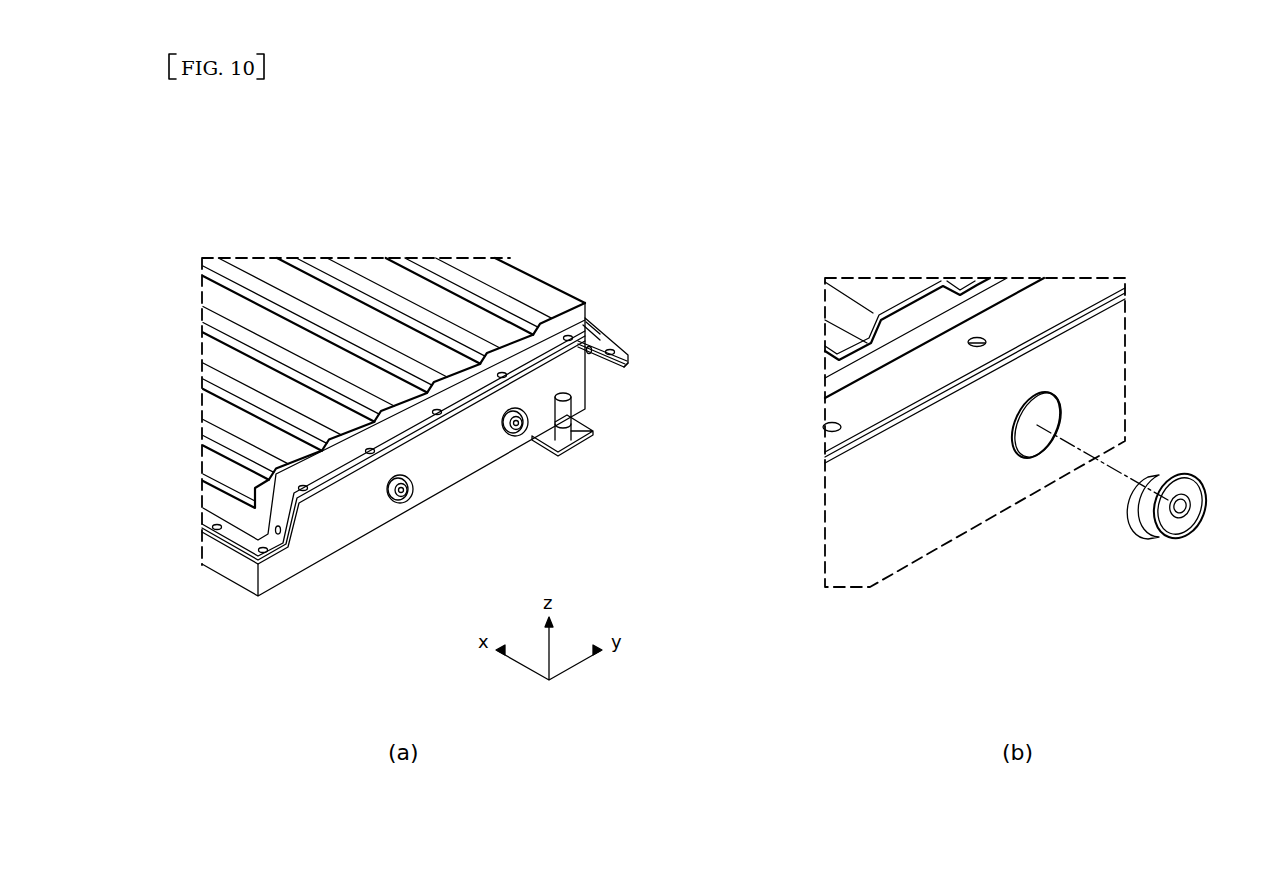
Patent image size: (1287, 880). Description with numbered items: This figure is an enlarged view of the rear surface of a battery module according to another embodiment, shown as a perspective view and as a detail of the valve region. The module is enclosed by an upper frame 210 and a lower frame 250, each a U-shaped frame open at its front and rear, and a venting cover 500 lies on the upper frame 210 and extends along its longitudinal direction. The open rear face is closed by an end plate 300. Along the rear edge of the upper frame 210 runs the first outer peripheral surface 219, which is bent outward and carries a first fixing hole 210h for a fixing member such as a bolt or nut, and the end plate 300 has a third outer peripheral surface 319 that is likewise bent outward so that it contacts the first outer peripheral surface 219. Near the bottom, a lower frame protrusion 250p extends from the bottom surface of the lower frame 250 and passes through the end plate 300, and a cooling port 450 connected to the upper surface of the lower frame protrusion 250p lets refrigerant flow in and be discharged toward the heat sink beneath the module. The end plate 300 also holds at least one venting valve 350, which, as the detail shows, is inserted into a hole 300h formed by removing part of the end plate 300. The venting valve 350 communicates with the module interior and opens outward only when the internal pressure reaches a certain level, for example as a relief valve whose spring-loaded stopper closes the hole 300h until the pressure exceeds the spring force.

The venting cover 500 is at (526, 288).
The upper frame 210 is at (589, 304).
The first fixing hole 210h is at (303, 486).
The first outer peripheral surface 219 is at (626, 353).
The third outer peripheral surface 319 is at (624, 367).
The end plate 300 is at (574, 383).
The hole 300h is at (1052, 404).
The lower frame 250 is at (248, 578).
The lower frame protrusion 250p is at (590, 435).
The venting valve 350 is at (524, 434).
The cooling port 450 is at (577, 441).